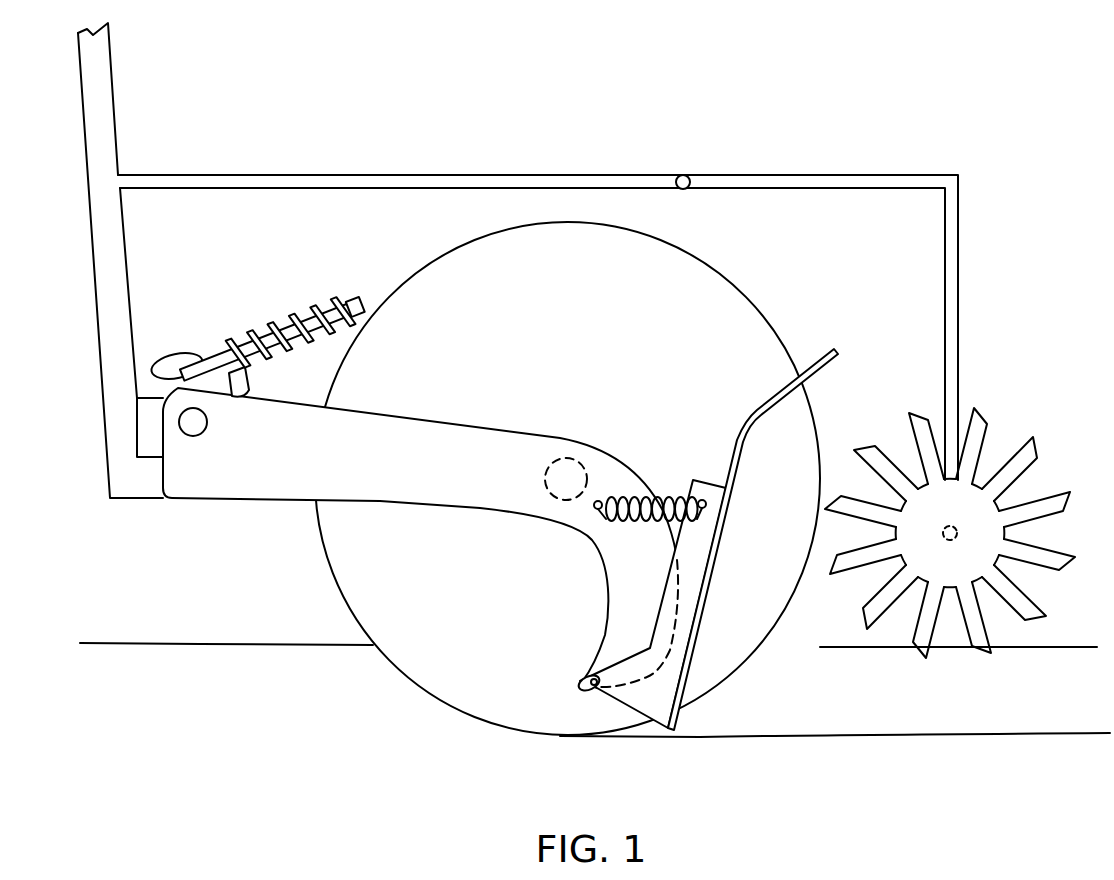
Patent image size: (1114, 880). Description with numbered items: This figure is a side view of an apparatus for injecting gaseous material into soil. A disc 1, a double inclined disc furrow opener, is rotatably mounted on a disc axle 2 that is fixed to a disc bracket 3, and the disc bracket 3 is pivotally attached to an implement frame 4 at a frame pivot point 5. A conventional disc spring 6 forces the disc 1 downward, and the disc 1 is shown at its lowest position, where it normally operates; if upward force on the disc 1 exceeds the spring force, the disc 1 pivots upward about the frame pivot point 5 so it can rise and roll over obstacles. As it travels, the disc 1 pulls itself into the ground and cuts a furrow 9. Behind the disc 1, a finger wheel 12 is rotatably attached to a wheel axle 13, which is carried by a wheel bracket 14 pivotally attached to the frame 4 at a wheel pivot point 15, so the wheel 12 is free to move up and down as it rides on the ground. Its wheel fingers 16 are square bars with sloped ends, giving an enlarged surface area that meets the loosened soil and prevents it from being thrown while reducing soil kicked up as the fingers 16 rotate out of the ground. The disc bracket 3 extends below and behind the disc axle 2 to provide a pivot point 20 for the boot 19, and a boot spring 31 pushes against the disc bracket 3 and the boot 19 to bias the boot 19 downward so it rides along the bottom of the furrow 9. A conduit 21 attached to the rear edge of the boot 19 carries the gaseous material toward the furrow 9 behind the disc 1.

The disc 1 is at (330, 579).
The disc axle 2 is at (558, 497).
The disc bracket 3 is at (228, 502).
The implement frame 4 is at (97, 291).
The frame pivot point 5 is at (208, 426).
The disc spring 6 is at (293, 318).
The furrow 9 is at (788, 718).
The finger wheel 12 is at (958, 499).
The wheel axle 13 is at (957, 532).
The wheel bracket 14 is at (960, 276).
The wheel pivot point 15 is at (686, 175).
The wheel fingers 16 is at (985, 416).
The boot 19 is at (631, 720).
The pivot point 20 is at (582, 678).
The conduit 21 is at (703, 606).
The boot spring 31 is at (662, 498).